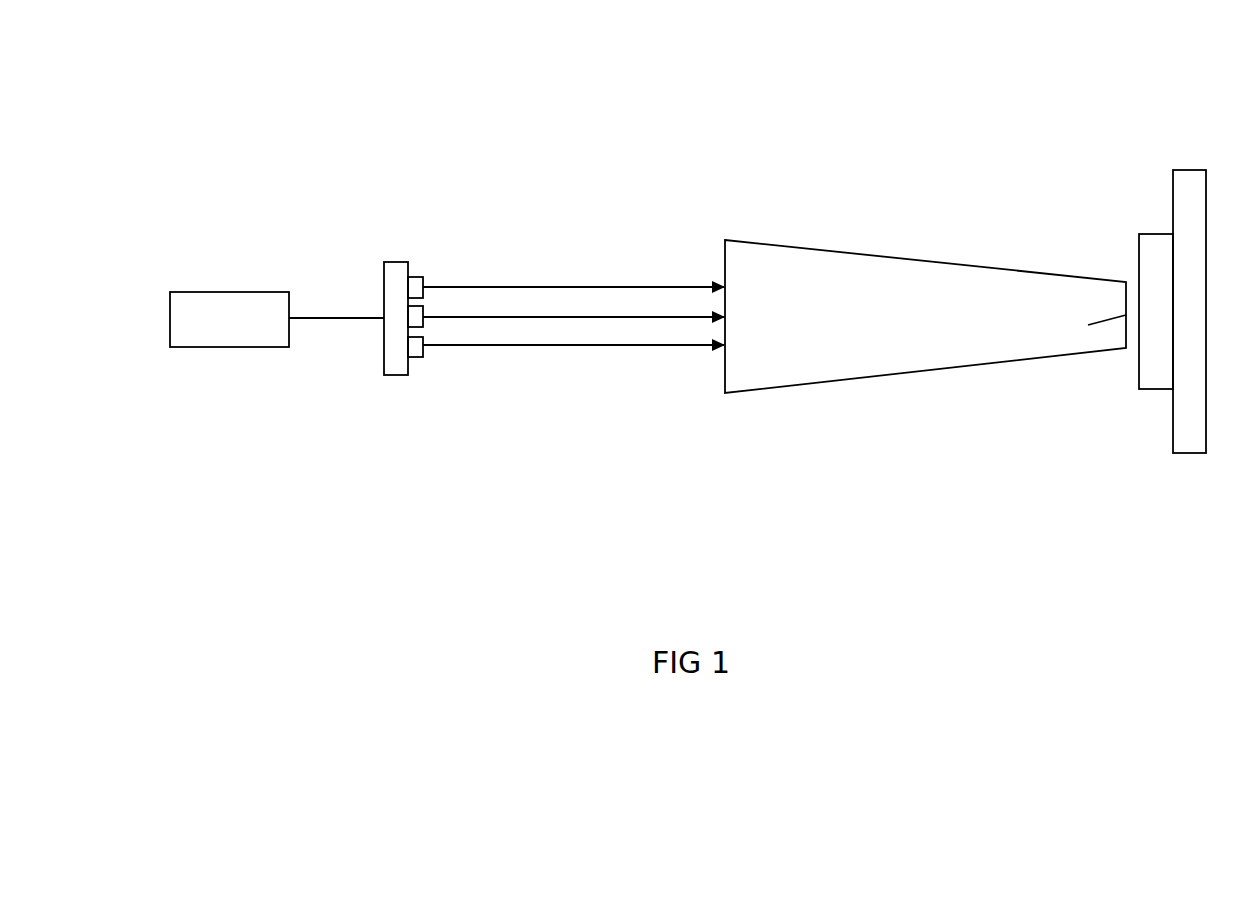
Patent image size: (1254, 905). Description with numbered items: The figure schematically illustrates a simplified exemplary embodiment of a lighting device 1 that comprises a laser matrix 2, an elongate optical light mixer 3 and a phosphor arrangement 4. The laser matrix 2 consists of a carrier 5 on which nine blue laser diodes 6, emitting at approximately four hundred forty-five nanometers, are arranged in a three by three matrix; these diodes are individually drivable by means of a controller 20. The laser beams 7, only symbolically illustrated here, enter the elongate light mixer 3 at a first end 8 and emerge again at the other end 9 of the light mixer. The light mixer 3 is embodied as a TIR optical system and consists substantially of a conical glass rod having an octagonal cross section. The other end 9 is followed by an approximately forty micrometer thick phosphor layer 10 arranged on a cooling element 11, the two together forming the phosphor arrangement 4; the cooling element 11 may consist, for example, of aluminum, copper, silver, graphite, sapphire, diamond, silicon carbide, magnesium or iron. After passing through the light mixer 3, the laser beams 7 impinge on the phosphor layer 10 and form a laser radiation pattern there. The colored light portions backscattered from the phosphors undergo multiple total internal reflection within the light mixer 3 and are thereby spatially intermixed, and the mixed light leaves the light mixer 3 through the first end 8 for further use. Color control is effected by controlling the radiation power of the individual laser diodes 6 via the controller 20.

The lighting device 1 is at (929, 144).
The laser matrix 2 is at (396, 254).
The optical light mixer 3 is at (860, 252).
The phosphor arrangement 4 is at (1170, 167).
The carrier 5 is at (400, 355).
The blue laser diodes 6 is at (418, 350).
The laser beams 7 is at (543, 286).
The first end 8 is at (725, 367).
The other end 9 is at (1088, 325).
The phosphor layer 10 is at (1156, 399).
The cooling element 11 is at (1193, 453).
The controller 20 is at (230, 292).